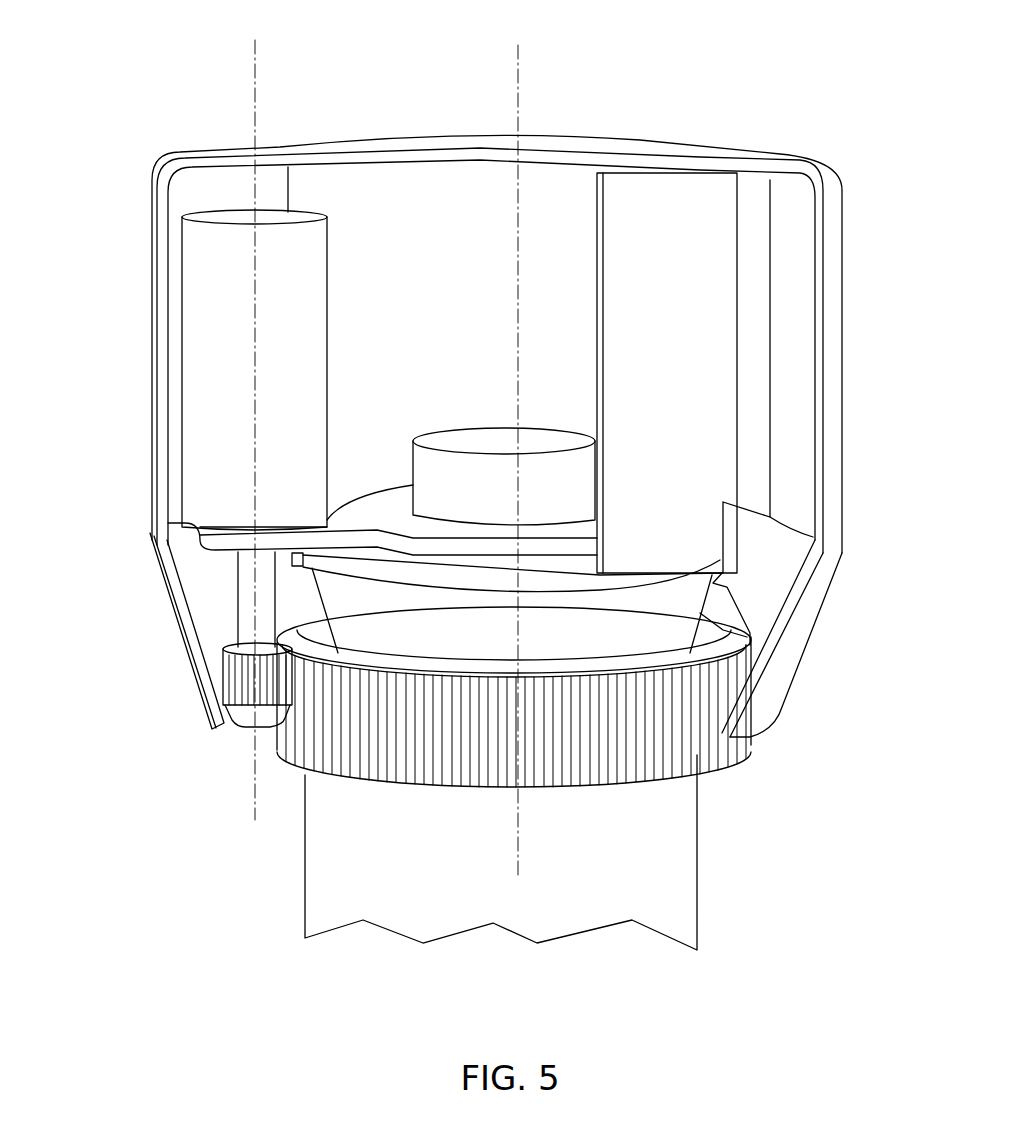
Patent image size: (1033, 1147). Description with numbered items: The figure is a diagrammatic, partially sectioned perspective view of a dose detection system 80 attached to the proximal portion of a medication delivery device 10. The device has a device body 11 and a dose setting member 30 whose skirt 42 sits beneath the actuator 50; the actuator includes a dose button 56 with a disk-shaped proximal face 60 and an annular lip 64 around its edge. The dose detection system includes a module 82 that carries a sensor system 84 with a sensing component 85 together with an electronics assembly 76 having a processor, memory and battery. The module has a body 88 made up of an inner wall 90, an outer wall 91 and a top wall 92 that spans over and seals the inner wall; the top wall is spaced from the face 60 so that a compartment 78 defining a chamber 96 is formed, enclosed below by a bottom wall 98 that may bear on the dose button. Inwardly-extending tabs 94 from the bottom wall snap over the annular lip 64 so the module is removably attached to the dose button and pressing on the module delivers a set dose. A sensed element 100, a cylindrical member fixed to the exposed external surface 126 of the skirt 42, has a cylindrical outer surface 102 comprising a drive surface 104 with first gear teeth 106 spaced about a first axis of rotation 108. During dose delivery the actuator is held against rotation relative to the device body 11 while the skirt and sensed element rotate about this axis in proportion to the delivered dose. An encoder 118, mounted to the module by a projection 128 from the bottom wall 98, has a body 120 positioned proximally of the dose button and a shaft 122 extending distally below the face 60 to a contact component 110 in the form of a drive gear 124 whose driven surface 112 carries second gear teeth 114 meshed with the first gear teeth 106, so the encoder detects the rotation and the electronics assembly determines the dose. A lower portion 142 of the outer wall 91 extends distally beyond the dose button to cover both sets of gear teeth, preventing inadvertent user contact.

The delivery device 10 is at (340, 950).
The device body 11 is at (677, 913).
The dose setting member 30 is at (584, 746).
The skirt 42 is at (727, 647).
The actuator 50 is at (388, 611).
The dose button 56 is at (180, 480).
The face 60 is at (487, 583).
The annular lip 64 is at (683, 577).
The electronics assembly 76 is at (450, 440).
The compartment 78 is at (577, 178).
The dose detection system 80 is at (866, 86).
The module 82 is at (473, 394).
The sensor system 84 is at (332, 302).
The sensing component 85 is at (195, 560).
The body 88 is at (155, 245).
The inner wall 90 is at (700, 253).
The outer wall 91 is at (833, 273).
The top wall 92 is at (476, 135).
The tabs 94 is at (727, 573).
The chamber 96 is at (407, 205).
The bottom wall 98 is at (347, 503).
The sensed element 100 is at (545, 815).
The cylindrical outer surface 102 is at (740, 772).
The drive surface 104 is at (576, 788).
The first gear teeth 106 is at (474, 790).
The first axis of rotation 108 is at (540, 85).
The contact component 110 is at (270, 728).
The driven surface 112 is at (218, 675).
The second gear teeth 114 is at (233, 713).
The encoder 118 is at (160, 318).
The body 120 is at (205, 378).
The shaft 122 is at (245, 577).
The drive gear 124 is at (240, 738).
The exposed external surface 126 is at (723, 733).
The projection 128 is at (237, 537).
The lower portion 142 is at (765, 688).